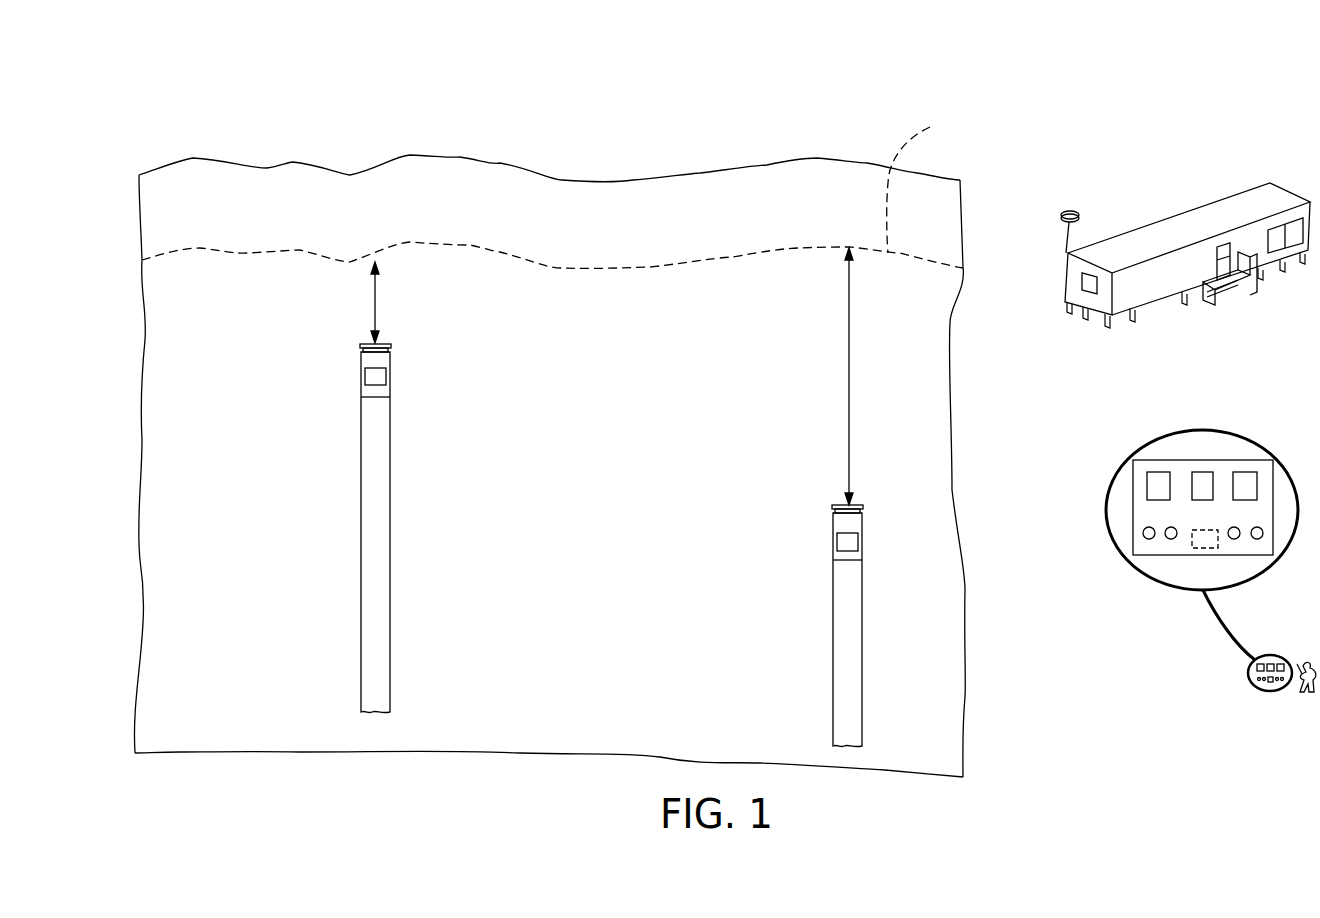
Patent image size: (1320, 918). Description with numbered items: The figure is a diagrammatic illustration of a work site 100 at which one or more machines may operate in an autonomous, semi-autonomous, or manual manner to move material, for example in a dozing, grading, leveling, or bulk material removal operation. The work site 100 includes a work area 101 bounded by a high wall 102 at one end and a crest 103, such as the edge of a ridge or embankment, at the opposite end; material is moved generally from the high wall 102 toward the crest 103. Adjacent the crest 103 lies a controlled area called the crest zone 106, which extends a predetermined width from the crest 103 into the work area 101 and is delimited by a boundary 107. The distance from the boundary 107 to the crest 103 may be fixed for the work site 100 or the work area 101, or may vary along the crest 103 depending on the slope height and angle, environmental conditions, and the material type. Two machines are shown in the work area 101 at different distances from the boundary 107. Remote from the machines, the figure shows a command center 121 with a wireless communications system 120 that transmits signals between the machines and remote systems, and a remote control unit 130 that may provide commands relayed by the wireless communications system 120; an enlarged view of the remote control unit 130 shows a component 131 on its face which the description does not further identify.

The work site 100 is at (183, 140).
The work area 101 is at (195, 313).
The high wall 102 is at (887, 768).
The crest 103 is at (288, 162).
The crest zone 106 is at (212, 197).
The boundary 107 is at (934, 180).
The wireless communications system 120 is at (1080, 217).
The command center 121 is at (1195, 233).
The remote control unit 130 is at (1167, 452).
The display / indicator of control unit 131 is at (1205, 540).